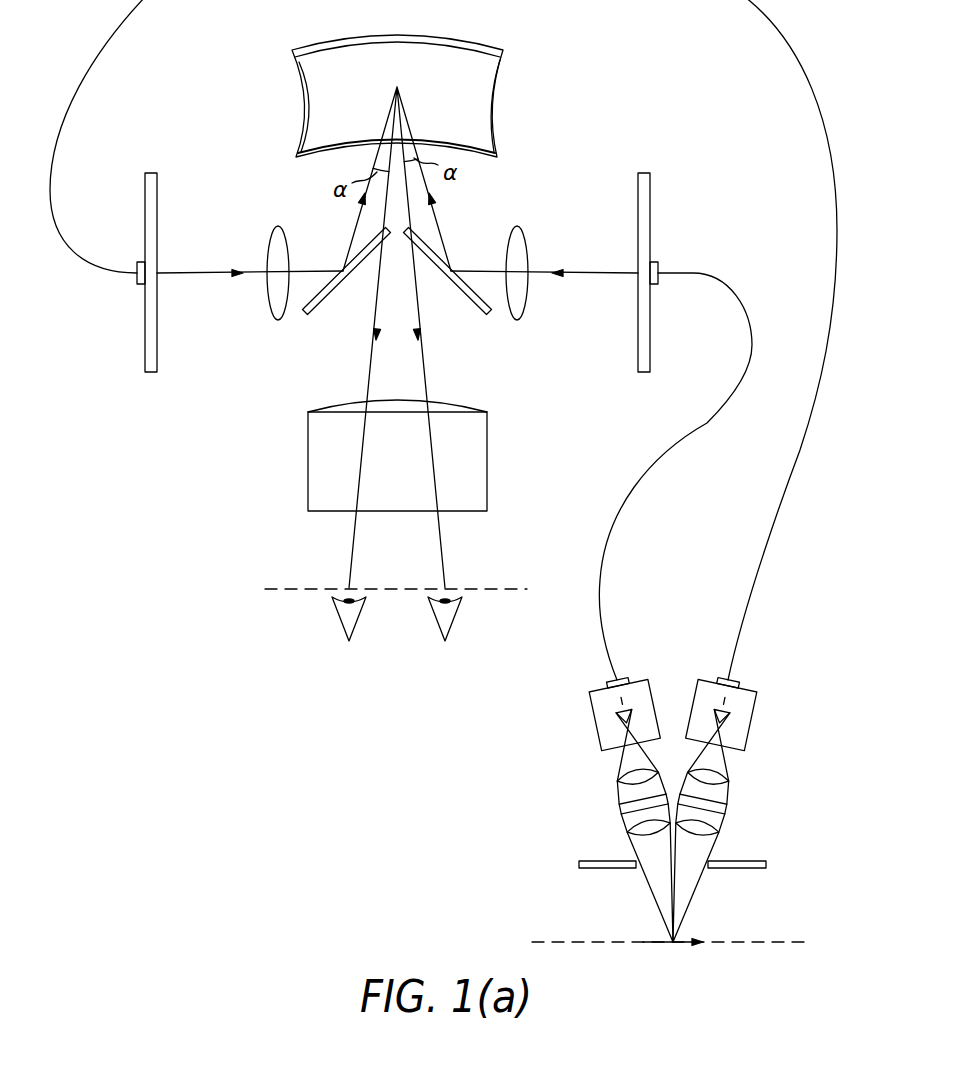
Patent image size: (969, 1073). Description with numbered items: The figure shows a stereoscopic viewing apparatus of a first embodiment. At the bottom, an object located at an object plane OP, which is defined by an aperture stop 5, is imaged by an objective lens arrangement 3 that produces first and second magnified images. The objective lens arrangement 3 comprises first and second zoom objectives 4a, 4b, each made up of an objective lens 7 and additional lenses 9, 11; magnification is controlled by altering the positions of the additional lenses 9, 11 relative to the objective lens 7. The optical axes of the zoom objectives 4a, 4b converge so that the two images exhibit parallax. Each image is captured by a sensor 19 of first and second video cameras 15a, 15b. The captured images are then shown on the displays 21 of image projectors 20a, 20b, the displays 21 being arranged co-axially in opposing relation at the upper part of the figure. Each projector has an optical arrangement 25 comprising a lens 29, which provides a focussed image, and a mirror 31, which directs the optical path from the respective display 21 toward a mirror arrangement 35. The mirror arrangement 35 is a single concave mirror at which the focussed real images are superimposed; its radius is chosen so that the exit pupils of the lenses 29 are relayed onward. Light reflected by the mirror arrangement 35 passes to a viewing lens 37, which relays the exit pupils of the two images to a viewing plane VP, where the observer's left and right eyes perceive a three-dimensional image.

The objective lens arrangement 3 is at (524, 827).
The first zoom objective 4a is at (568, 763).
The second zoom objective 4b is at (779, 763).
The aperture stop 5 is at (768, 864).
The objective lens 7 is at (626, 830).
The additional lens 9 is at (617, 808).
The additional lens 11 is at (614, 780).
The first video camera 15a is at (586, 708).
The second video camera 15b is at (761, 708).
The sensor 19 is at (619, 702).
The first image projector 20a is at (137, 143).
The second image projector 20b is at (678, 170).
The display 21 is at (140, 360).
The optical arrangement 25 is at (272, 342).
The lens 29 is at (276, 228).
The mirror 31 is at (316, 315).
The mirror arrangement 35 is at (515, 70).
The viewing lens 37 is at (502, 427).
The viewing plane VP is at (508, 587).
The object plane OP is at (775, 945).